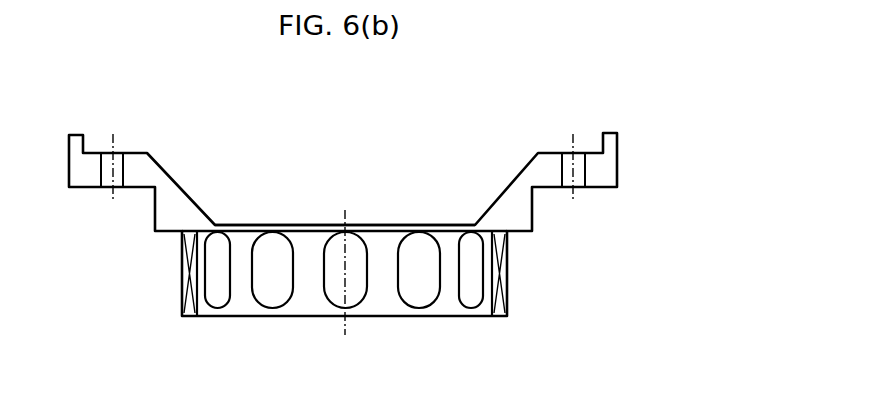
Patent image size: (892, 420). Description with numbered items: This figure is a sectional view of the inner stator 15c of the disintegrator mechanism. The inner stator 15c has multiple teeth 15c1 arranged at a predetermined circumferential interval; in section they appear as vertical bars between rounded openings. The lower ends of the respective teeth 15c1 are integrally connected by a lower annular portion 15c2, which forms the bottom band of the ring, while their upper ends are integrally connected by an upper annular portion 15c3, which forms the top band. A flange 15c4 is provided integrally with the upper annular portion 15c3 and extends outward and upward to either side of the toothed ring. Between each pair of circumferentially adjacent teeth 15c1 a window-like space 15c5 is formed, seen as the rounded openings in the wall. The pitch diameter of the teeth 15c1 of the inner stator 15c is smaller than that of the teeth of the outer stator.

The inner stator 15c is at (409, 221).
The teeth 15c1 is at (305, 293).
The lower annular portion 15c2 is at (240, 303).
The upper annular portion 15c3 is at (252, 223).
The flange 15c4 is at (550, 160).
The window-like space 15c5 is at (327, 225).